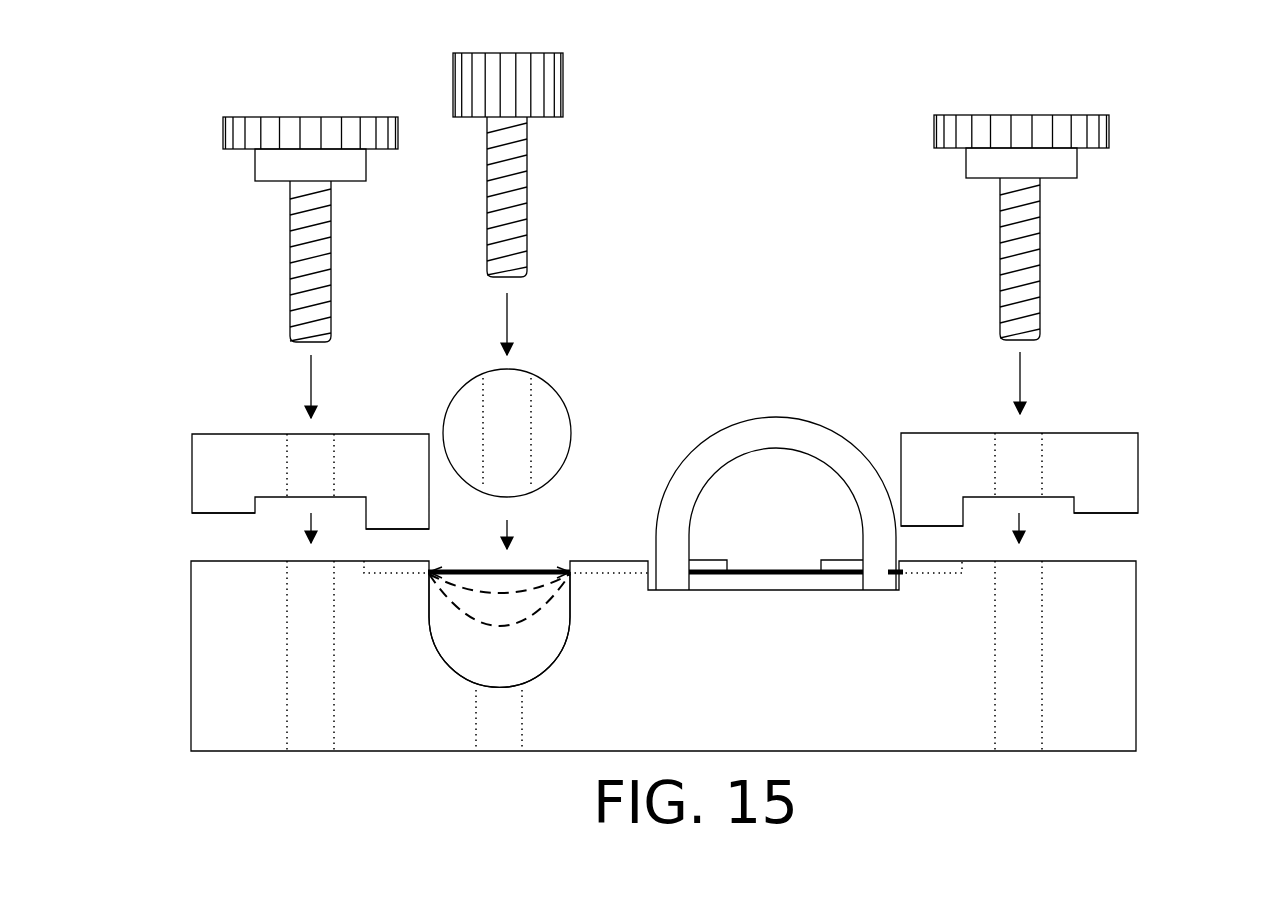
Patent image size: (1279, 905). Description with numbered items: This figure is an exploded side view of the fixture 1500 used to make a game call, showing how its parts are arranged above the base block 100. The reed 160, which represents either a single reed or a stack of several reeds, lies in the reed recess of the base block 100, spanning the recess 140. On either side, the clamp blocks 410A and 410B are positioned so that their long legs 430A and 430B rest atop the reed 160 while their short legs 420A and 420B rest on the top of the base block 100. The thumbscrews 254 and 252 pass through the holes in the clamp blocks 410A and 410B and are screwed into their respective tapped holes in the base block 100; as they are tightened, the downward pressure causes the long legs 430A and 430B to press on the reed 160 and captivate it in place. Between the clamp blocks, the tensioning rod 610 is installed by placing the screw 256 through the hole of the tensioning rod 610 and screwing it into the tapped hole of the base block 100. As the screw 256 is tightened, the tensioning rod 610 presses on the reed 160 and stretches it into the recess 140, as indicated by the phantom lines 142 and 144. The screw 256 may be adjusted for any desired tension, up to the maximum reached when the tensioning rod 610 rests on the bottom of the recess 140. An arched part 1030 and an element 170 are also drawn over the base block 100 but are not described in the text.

The thumbscrew 254 is at (303, 117).
The thumbscrew 256 is at (563, 92).
The thumbscrew 252 is at (934, 131).
The fixture 1500 is at (1224, 118).
The clamp block 410A is at (372, 434).
The short leg 420A is at (222, 513).
The long leg 430A is at (400, 529).
The tensioning rod 610 is at (566, 402).
The reed 160 is at (530, 572).
The recess 140 is at (525, 664).
The phantom line 142 is at (535, 592).
The phantom line 144 is at (527, 616).
The arch bracket 1030 is at (718, 425).
The sensor element 170 is at (852, 413).
The clamp block 410B is at (1082, 433).
The short leg 420B is at (1105, 513).
The long leg 430B is at (922, 527).
The base block 100 is at (1137, 658).